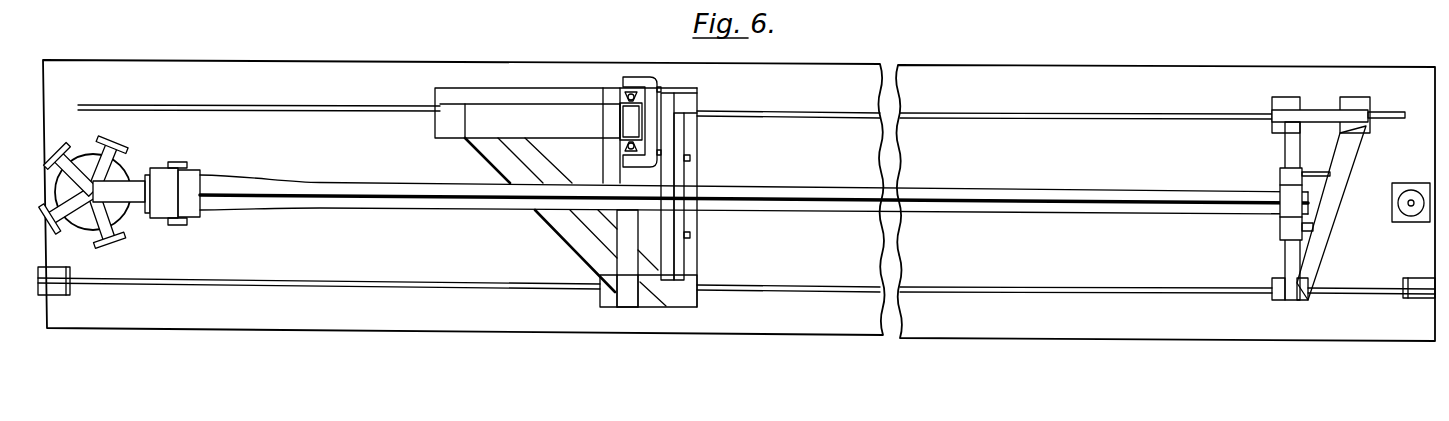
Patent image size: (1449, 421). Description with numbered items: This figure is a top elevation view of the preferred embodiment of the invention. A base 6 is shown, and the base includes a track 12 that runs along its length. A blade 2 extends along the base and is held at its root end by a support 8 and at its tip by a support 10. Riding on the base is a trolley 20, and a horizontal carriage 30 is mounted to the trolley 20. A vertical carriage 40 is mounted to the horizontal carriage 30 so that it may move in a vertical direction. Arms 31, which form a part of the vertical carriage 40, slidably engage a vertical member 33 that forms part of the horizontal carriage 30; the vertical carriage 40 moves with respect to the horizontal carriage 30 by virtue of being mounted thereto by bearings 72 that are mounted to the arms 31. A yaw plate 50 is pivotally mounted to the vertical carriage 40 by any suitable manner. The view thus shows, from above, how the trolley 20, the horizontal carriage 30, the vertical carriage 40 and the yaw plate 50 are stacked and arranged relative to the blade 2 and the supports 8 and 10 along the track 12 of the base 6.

The blade 2 is at (826, 188).
The base 6 is at (442, 324).
The support 8 is at (86, 154).
The support 10 is at (1280, 229).
The track 12 is at (285, 104).
The trolley 20 is at (652, 308).
The horizontal carriage 30 is at (508, 112).
The arms 31 is at (635, 78).
The vertical member 33 is at (627, 262).
The vertical carriage 40 is at (664, 254).
The yaw plate 50 is at (680, 133).
The bearings 72 is at (622, 100).